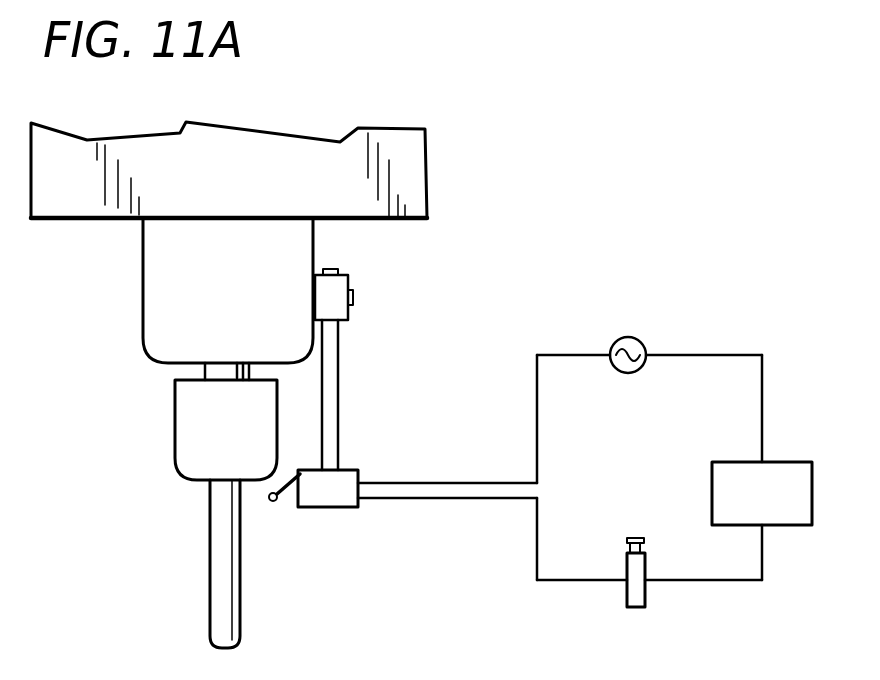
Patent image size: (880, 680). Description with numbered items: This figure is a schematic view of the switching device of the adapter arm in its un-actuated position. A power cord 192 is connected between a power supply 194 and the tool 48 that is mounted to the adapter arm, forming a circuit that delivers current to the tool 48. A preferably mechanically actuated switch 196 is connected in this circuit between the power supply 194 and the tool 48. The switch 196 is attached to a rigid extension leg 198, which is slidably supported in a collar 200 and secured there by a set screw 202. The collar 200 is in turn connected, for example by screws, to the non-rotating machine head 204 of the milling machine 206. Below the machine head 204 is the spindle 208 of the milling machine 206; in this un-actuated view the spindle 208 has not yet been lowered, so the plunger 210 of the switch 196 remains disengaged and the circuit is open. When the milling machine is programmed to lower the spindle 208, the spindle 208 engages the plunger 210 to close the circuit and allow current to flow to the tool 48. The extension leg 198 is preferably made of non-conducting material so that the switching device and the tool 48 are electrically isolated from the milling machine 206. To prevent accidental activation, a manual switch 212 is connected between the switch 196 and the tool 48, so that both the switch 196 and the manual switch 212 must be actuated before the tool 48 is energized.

The milling machine 206 is at (440, 182).
The machine head 204 is at (260, 301).
The spindle 208 is at (255, 441).
The set screw 202 is at (353, 297).
The collar 200 is at (338, 275).
The extension leg 198 is at (340, 375).
The switch 196 is at (333, 507).
The plunger 210 is at (274, 502).
The power cord 192 is at (763, 383).
The power supply 194 is at (618, 340).
The tool 48 is at (778, 525).
The manual switch 212 is at (625, 600).